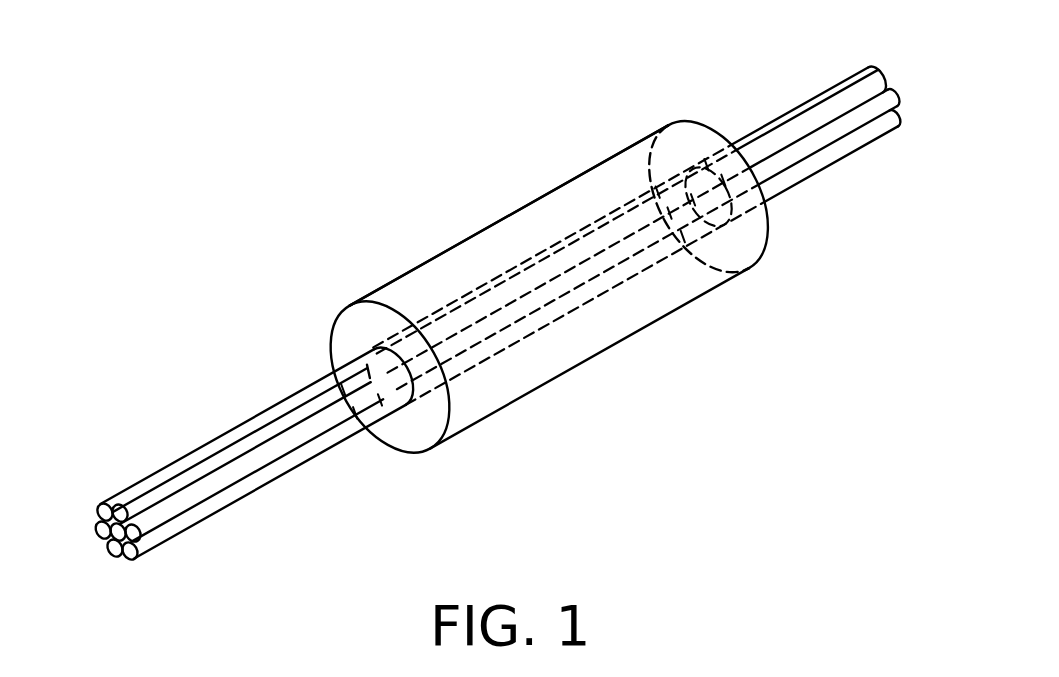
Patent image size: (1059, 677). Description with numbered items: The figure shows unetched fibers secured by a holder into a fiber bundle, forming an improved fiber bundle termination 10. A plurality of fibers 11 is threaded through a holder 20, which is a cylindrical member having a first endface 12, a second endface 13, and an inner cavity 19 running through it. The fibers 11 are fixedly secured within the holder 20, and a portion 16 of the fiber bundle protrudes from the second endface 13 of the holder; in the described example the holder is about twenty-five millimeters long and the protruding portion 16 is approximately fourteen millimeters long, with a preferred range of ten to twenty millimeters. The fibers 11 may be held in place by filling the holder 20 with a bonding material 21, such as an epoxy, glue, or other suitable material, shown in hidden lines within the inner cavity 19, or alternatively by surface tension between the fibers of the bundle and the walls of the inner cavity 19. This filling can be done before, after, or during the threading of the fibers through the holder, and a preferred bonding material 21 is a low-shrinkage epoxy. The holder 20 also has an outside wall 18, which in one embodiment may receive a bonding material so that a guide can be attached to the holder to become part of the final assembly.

The fiber bundle termination 10 is at (323, 131).
The fibers 11 is at (815, 93).
The first endface 12 is at (771, 227).
The second endface 13 is at (405, 438).
The protruding portion 16 is at (183, 455).
The outside wall 18 is at (522, 387).
The inner cavity 19 is at (558, 250).
The holder 20 is at (457, 243).
The bonding material 21 is at (444, 313).